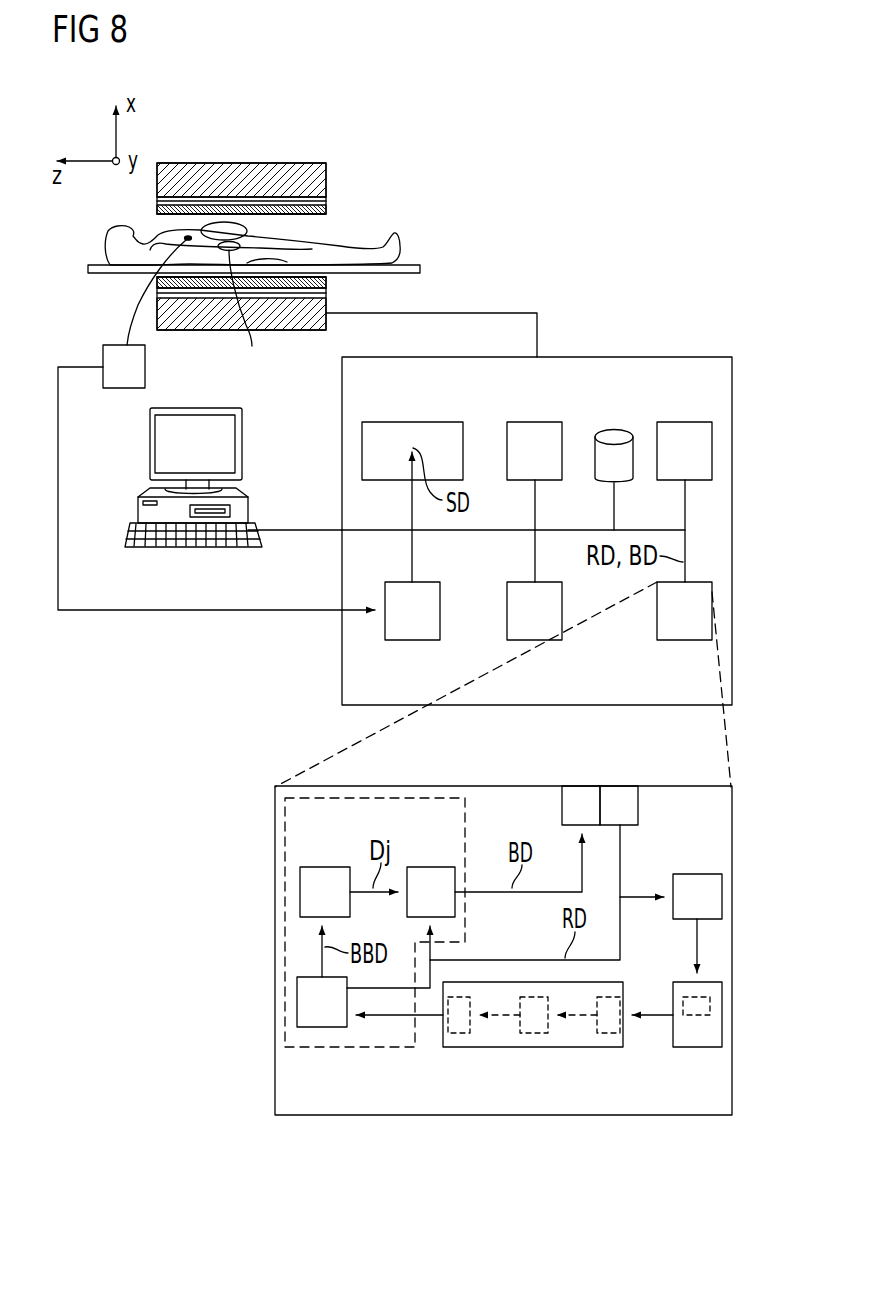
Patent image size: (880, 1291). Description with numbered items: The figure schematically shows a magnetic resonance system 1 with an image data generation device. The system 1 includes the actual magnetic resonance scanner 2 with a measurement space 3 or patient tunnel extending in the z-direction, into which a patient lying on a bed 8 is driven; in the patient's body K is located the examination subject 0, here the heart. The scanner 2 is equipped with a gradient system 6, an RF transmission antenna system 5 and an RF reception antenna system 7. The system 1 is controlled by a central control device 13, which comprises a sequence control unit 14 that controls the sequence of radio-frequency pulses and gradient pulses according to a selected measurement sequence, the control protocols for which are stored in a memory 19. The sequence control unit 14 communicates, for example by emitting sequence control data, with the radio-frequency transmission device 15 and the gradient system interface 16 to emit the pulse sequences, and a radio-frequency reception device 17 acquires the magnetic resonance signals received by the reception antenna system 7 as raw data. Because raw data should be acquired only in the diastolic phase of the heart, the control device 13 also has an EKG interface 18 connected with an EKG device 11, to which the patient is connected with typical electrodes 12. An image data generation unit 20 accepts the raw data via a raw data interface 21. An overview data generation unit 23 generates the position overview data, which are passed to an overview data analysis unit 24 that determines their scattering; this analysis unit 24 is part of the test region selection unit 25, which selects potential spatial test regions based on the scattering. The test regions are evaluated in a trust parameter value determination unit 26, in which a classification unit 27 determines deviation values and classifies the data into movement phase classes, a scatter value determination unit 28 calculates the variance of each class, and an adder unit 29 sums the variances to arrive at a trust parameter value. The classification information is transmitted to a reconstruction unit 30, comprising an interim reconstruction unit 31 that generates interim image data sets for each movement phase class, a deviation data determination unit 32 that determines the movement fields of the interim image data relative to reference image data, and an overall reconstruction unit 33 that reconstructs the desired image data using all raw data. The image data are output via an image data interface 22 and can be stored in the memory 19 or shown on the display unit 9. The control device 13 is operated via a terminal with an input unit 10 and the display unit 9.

The examination subject 0 is at (237, 308).
The magnetic resonance system 1 is at (590, 146).
The magnetic resonance scanner 2 is at (303, 170).
The measurement space 3 is at (320, 228).
The RF transmission antenna system 5 is at (258, 202).
The gradient system 6 is at (292, 197).
The RF reception antenna system 7 is at (225, 232).
The bed 8 is at (427, 267).
The display unit 9 is at (200, 408).
The input unit 10 is at (193, 549).
The EKG device 11 is at (113, 345).
The electrodes 12 is at (188, 232).
The central control device 13 is at (632, 354).
The sequence control unit 14 is at (412, 422).
The radio-frequency transmission device 15 is at (533, 422).
The gradient system interface 16 is at (506, 611).
The radio-frequency reception device 17 is at (683, 422).
The EKG interface 18 is at (412, 643).
The memory 19 is at (612, 429).
The image data generation unit 20 is at (685, 643).
The raw data interface 21 is at (630, 806).
The image data interface 22 is at (570, 806).
The overview data generation unit 23 is at (722, 897).
The overview data analysis unit 24 is at (712, 1000).
The test region selection unit 25 is at (697, 1049).
The trust parameter value determination unit 26 is at (568, 1049).
The classification unit 27 is at (610, 1035).
The scatter value determination unit 28 is at (532, 1035).
The adder unit 29 is at (456, 1035).
The reconstruction unit 30 is at (285, 880).
The interim reconstruction unit 31 is at (297, 1005).
The deviation data determination unit 32 is at (330, 867).
The overall reconstruction unit 33 is at (432, 867).
The body K is at (398, 252).